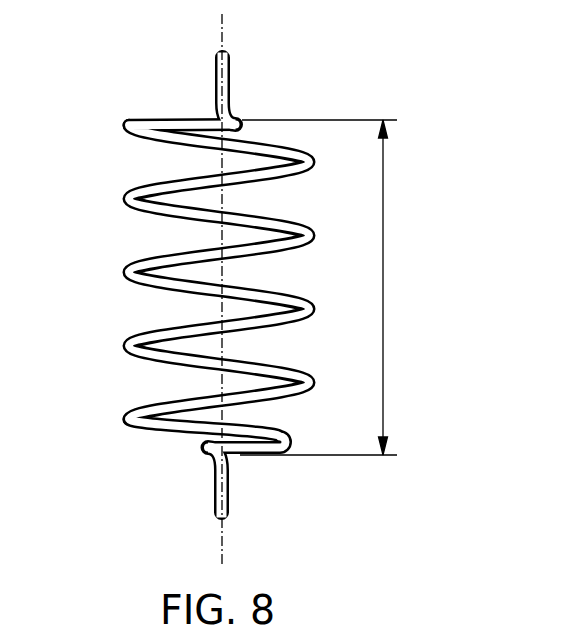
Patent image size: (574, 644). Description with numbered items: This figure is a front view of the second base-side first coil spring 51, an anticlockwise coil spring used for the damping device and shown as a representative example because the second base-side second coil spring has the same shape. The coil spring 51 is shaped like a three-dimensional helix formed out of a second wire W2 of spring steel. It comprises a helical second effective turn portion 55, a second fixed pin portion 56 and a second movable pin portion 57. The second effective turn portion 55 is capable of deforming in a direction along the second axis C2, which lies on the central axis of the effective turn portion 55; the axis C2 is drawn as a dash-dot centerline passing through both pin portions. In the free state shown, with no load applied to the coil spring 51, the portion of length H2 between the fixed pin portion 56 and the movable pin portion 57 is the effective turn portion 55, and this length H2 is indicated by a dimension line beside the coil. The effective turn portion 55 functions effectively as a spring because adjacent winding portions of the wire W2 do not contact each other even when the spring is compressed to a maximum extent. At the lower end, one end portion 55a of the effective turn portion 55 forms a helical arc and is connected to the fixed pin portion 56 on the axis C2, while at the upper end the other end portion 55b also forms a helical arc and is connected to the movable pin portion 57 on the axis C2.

The second base-side first coil spring 51 is at (212, 288).
The second effective turn portion 55 is at (213, 307).
The one end portion of the second effective turn portion 55a is at (235, 441).
The other end portion of the second effective turn portion 55b is at (188, 117).
The second fixed pin portion 56 is at (212, 497).
The second movable pin portion 57 is at (213, 80).
The second axis C2 is at (223, 200).
The length of the second effective turn portion H2 is at (385, 274).
The second wire W2 is at (175, 316).